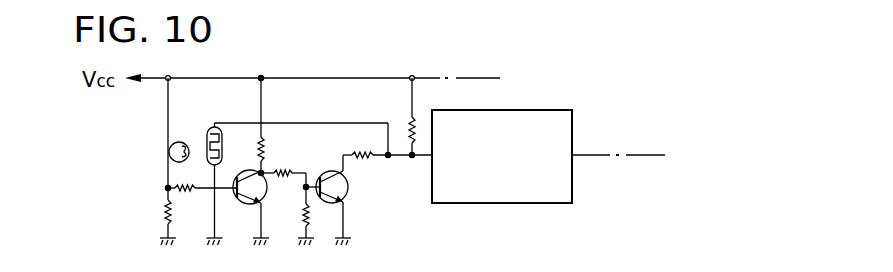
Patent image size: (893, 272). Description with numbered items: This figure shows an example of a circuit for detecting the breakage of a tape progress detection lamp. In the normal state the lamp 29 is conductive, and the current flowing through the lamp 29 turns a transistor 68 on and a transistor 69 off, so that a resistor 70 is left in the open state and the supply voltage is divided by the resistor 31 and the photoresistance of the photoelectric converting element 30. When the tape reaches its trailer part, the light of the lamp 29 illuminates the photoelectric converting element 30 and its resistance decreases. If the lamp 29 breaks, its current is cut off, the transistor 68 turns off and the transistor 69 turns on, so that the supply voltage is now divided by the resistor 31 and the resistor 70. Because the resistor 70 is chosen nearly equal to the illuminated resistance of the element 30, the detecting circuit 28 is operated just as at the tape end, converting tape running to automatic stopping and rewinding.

The detecting circuit 28 is at (574, 117).
The lamp 29 is at (169, 151).
The photoelectric converting element 30 is at (212, 125).
The resistor 31 is at (409, 126).
The transistor 68 is at (247, 202).
The transistor 69 is at (345, 197).
The resistor 70 is at (360, 163).